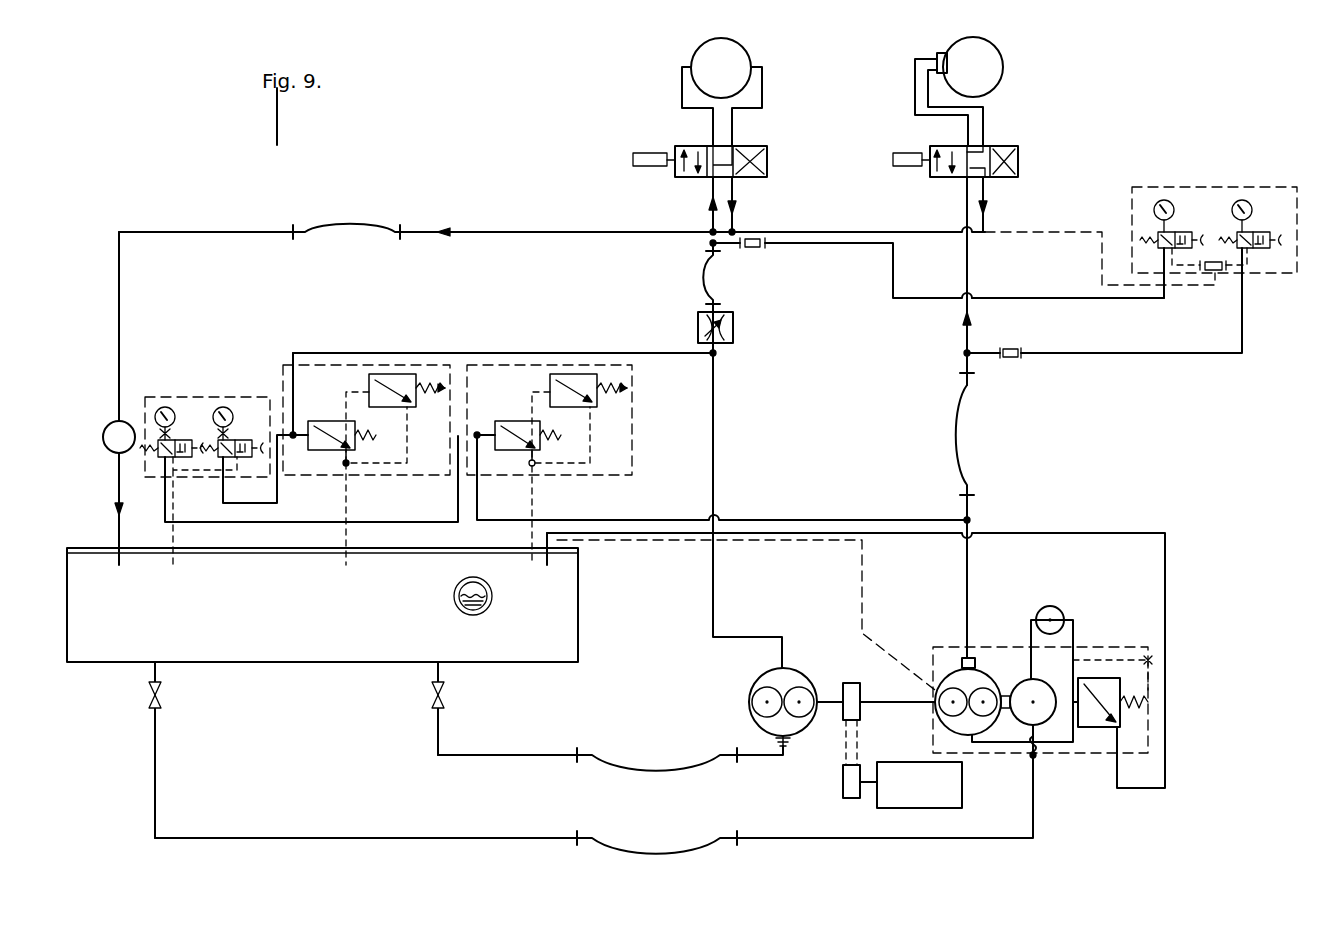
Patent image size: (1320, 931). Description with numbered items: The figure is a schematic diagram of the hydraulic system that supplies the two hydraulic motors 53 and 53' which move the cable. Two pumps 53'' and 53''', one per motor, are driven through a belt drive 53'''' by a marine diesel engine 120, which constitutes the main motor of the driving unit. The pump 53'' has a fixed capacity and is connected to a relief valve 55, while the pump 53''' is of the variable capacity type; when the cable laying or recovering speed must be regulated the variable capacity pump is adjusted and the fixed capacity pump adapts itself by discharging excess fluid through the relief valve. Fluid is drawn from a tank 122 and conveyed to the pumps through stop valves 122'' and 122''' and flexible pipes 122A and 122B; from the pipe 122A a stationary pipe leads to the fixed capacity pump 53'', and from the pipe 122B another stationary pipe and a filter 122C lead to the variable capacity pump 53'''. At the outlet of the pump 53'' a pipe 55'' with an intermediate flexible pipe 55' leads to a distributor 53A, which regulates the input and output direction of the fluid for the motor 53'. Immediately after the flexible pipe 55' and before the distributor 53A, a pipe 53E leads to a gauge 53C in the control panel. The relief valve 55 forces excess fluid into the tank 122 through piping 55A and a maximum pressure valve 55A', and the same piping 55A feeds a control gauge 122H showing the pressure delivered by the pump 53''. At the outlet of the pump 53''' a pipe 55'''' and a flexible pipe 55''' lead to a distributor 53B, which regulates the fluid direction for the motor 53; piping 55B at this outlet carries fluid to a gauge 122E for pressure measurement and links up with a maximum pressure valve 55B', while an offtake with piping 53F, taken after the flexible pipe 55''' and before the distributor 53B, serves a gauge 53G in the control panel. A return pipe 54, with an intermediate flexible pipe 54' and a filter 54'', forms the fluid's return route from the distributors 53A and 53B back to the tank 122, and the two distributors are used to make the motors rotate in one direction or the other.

The hydraulic motor 53 is at (988, 91).
The hydraulic motor 53' is at (753, 87).
The fixed capacity pump 53'' is at (773, 705).
The variable capacity pump 53''' is at (854, 667).
The belt drive 53'''' is at (856, 740).
The distributor 53A is at (767, 157).
The distributor 53B is at (1020, 157).
The gauge 53C is at (1164, 200).
The pipe 53E is at (920, 300).
The piping 53F is at (1210, 356).
The gauge 53G is at (1242, 200).
The pipe 54 is at (667, 255).
The flexible pipe 54' is at (346, 202).
The filter 54'' is at (92, 398).
The relief valve 55 is at (740, 324).
The flexible pipe 55' is at (675, 277).
The pipe 55'' is at (538, 510).
The flexible pipe 55''' is at (1004, 445).
The pipe 55'''' is at (1063, 313).
The piping 55A is at (352, 390).
The maximum pressure valve 55A' is at (366, 441).
The piping 55B is at (720, 470).
The maximum pressure valve 55B' is at (549, 440).
The marine diesel engine 120 is at (893, 766).
The tank 122 is at (322, 616).
The stop valve 122'' is at (477, 708).
The stop valve 122''' is at (201, 750).
The flexible pipe 122A is at (657, 772).
The flexible pipe 122B is at (657, 855).
The filter 122C is at (1058, 612).
The gauge 122E is at (165, 407).
The control gauge 122H is at (223, 407).